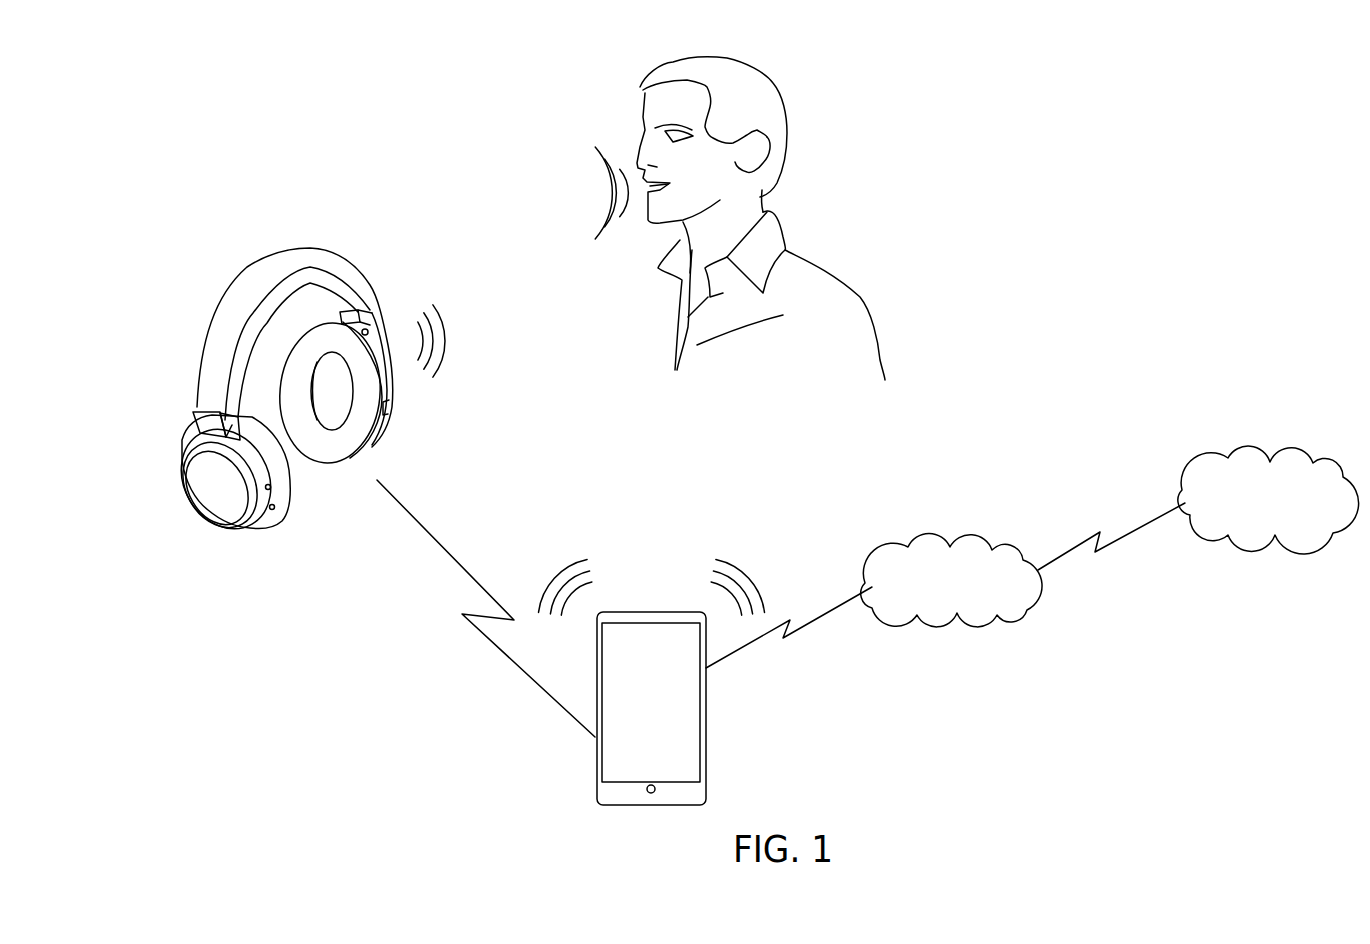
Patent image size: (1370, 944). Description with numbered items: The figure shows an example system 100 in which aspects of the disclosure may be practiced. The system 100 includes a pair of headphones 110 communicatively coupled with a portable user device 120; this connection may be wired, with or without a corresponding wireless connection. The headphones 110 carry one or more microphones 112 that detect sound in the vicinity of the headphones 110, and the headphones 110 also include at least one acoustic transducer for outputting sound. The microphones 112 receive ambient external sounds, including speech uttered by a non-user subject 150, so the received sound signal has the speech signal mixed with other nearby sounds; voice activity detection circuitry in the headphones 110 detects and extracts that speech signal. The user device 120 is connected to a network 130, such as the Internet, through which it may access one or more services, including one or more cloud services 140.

The system 100 is at (1200, 145).
The headphones 110 is at (245, 297).
The microphones 112 is at (268, 487).
The portable user device 120 is at (706, 742).
The network 130 is at (983, 535).
The cloud services 140 is at (1290, 452).
The non-user subject 150 is at (773, 85).